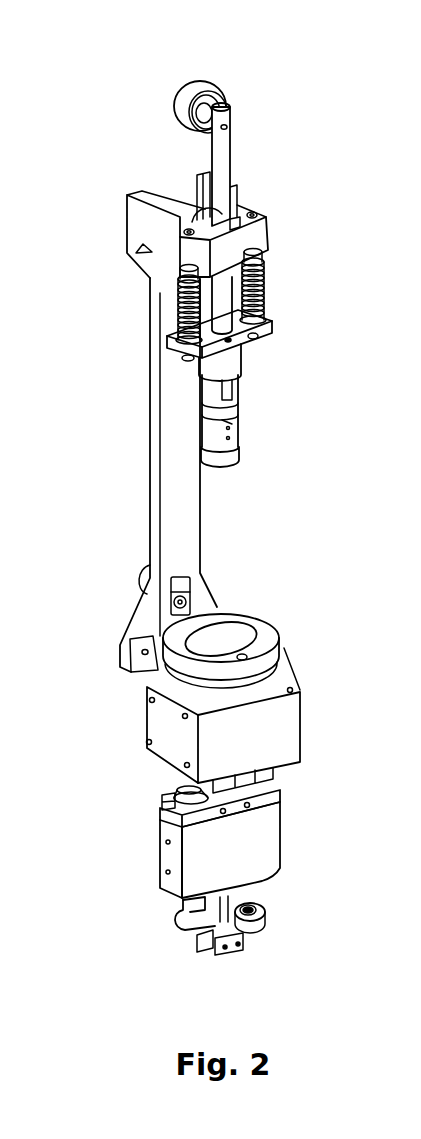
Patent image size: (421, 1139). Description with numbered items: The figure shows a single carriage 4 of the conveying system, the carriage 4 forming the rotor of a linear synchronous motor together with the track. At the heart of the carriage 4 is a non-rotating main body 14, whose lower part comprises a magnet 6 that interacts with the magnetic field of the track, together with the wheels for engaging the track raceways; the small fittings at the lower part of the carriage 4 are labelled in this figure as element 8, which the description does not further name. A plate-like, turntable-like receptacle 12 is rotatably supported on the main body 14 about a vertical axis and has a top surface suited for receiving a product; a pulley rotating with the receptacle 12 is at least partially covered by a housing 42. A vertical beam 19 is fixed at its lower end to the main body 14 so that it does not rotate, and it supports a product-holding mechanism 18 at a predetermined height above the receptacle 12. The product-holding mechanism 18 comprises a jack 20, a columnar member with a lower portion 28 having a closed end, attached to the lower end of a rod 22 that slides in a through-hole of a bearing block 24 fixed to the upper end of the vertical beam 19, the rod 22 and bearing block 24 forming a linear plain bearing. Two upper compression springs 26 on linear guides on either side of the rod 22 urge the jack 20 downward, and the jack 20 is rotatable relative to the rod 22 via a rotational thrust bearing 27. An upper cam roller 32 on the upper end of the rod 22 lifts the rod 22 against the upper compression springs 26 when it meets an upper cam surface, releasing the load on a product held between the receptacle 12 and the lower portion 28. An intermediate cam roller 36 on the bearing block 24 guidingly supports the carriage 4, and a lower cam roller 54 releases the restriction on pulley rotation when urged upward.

The carriage 4 is at (143, 78).
The product-holding mechanism 18 is at (320, 186).
The upper cam roller 32 is at (233, 105).
The rod 22 is at (237, 159).
The intermediate cam roller 36 is at (183, 204).
The bearing block 24 is at (268, 227).
The upper compression springs 26 is at (262, 311).
The rotational thrust bearing 27 is at (237, 365).
The jack 20 is at (250, 406).
The lower portion 28 is at (240, 450).
The vertical beam 19 is at (202, 513).
The lower cam roller 54 is at (138, 587).
The main body 14 is at (118, 768).
The receptacle 12 is at (278, 643).
The housing 42 is at (300, 728).
The connector 8 is at (168, 790).
The magnet 6 is at (283, 840).